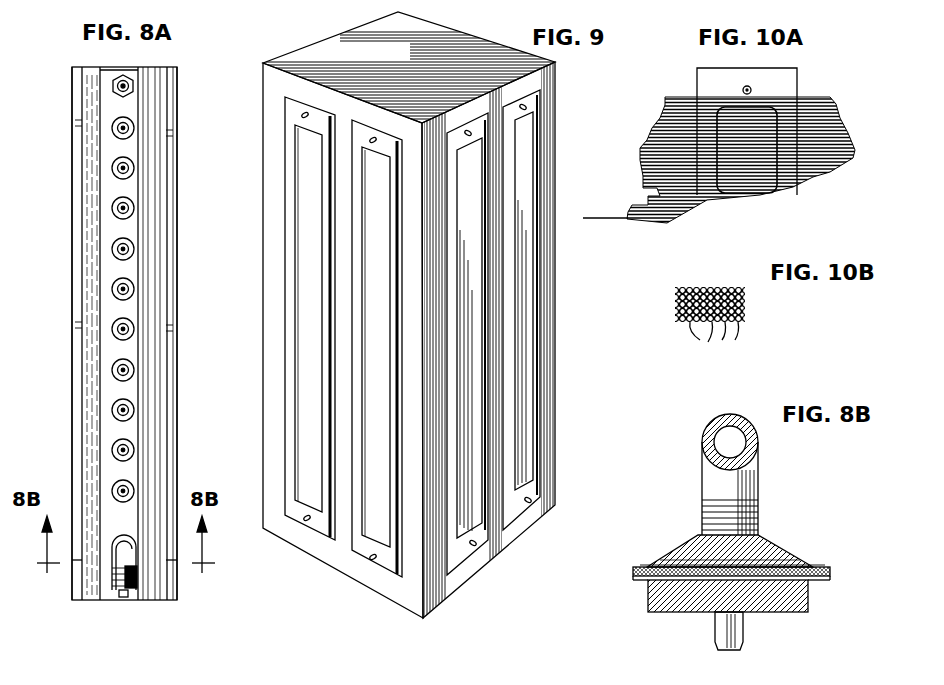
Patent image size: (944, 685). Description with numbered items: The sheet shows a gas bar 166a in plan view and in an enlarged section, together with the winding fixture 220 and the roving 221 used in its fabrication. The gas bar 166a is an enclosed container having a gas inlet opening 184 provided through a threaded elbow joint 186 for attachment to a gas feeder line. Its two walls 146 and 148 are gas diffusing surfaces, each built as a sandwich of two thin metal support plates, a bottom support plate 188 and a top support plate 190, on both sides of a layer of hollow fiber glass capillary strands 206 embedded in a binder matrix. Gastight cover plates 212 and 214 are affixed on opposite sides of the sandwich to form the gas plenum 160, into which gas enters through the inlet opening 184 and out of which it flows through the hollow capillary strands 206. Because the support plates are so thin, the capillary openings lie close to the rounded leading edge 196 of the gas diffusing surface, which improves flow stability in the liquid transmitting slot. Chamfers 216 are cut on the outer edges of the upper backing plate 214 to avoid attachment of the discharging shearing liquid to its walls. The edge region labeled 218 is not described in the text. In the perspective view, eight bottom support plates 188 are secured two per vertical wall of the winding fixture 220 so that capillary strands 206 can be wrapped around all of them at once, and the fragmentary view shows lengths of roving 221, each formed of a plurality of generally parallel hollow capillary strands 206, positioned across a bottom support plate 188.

In FIG. 8A, the wall 146 is at (72, 276).
In FIG. 8B, the wall 146 is at (638, 572).
In FIG. 8A, the wall 148 is at (177, 277).
In FIG. 8B, the wall 148 is at (836, 576).
In FIG. 8B, the gas plenum 160 is at (705, 584).
In FIG. 8A, the gas bar 166a is at (207, 138).
In FIG. 8B, the gas bar 166a is at (662, 520).
In FIG. 8A, the gas inlet opening 184 is at (117, 589).
In FIG. 8B, the gas inlet opening 184 is at (725, 444).
In FIG. 8A, the elbow joint 186 is at (125, 556).
In FIG. 8B, the elbow joint 186 is at (758, 477).
In FIG. 9, the bottom support plate 188 is at (357, 305).
In FIG. 10A, the bottom support plate 188 is at (798, 83).
In FIG. 8B, the bottom support plate 188 is at (682, 578).
In FIG. 8A, the top support plate 190 is at (80, 153).
In FIG. 8B, the top support plate 190 is at (753, 557).
In FIG. 8B, the leading edge 196 is at (640, 578).
In FIG. 10B, the hollow capillary strands 206 is at (722, 340).
In FIG. 8B, the cover plate 212 is at (757, 613).
In FIG. 8A, the cover plate 214 is at (115, 70).
In FIG. 8B, the cover plate 214 is at (690, 540).
In FIG. 8A, the chamfers 216 is at (93, 353).
In FIG. 8B, the chamfers 216 is at (668, 556).
In FIG. 8B, the edge strip 218 is at (660, 564).
In FIG. 9, the winding fixture 220 is at (330, 556).
In FIG. 10A, the roving 221 is at (767, 183).
In FIG. 10B, the roving 221 is at (668, 327).